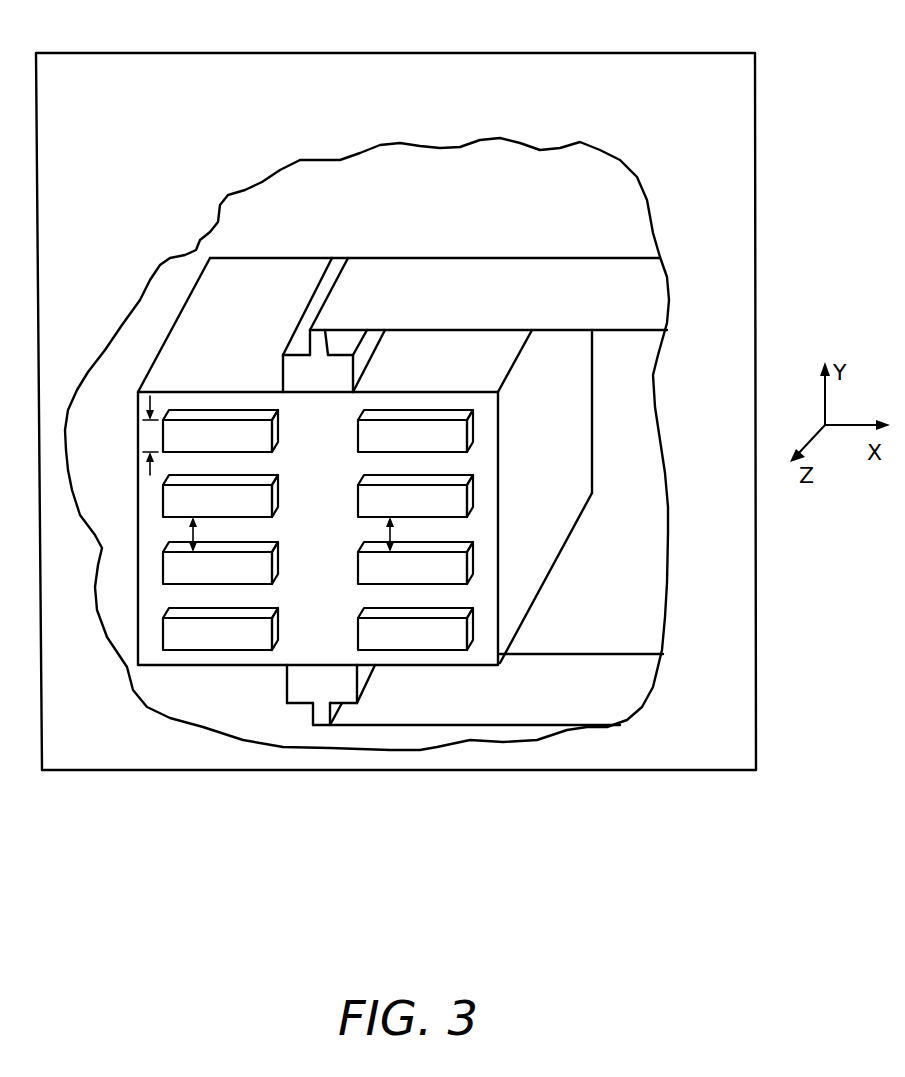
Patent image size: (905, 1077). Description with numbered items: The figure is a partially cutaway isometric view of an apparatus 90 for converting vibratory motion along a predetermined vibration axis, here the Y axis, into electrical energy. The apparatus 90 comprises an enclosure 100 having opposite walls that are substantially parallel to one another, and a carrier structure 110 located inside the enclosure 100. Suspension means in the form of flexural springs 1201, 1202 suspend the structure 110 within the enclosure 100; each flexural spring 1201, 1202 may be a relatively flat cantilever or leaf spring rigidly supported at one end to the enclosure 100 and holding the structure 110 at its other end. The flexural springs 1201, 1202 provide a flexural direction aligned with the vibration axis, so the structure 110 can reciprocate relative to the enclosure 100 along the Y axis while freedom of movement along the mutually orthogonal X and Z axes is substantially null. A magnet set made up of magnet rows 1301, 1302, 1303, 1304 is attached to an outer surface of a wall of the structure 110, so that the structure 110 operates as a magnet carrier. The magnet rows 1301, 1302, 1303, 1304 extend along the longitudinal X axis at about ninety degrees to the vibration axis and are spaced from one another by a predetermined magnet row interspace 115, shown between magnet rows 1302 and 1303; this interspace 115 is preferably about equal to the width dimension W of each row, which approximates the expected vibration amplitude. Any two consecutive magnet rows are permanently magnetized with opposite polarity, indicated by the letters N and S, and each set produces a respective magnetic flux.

The apparatus for converting vibratory motion to electrical energy 90 is at (790, 62).
The enclosure 100 is at (283, 54).
The carrier structure 110 is at (140, 455).
The flexural spring 1201 is at (462, 268).
The flexural spring 1202 is at (600, 705).
The magnet row 1301 is at (279, 428).
The magnet row 1302 is at (279, 491).
The magnet row 1303 is at (279, 555).
The magnet row 1304 is at (279, 620).
The magnet row interspace 115 is at (196, 531).